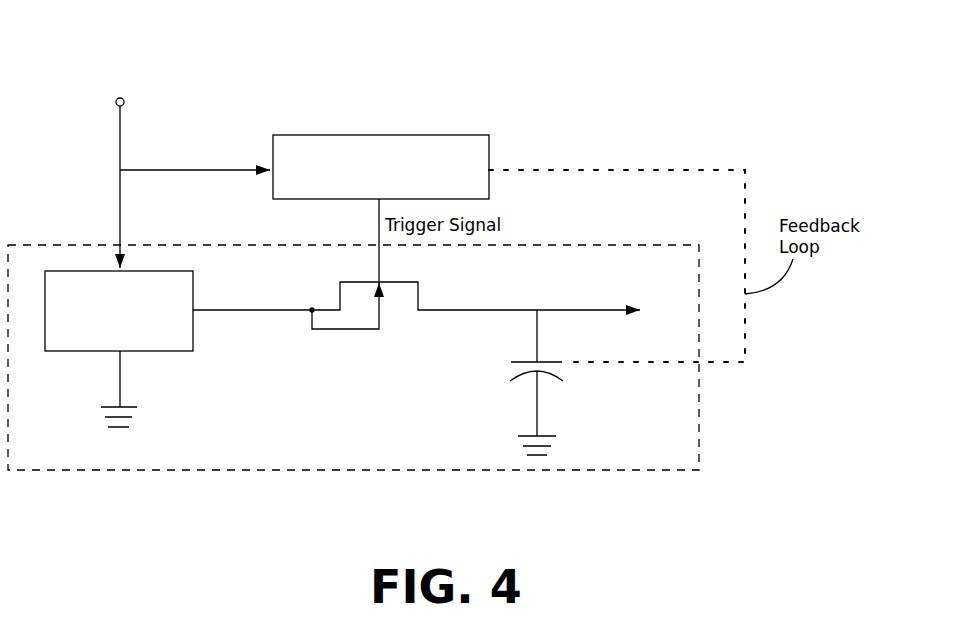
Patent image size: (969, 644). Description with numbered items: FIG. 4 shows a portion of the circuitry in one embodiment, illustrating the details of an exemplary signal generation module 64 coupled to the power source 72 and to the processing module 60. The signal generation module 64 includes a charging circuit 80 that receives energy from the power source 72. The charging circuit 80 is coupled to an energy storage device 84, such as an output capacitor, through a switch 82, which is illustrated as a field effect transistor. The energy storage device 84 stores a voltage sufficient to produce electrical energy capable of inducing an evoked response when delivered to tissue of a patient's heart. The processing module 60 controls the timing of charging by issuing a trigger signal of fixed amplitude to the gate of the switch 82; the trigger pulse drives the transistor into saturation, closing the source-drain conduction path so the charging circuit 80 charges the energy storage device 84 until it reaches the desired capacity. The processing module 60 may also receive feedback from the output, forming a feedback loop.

The power source 72 is at (100, 101).
The processing module 60 is at (369, 190).
The signal generation module 64 is at (620, 474).
The charging circuit 80 is at (193, 330).
The switch 82 is at (357, 352).
The energy storage device 84 is at (594, 389).